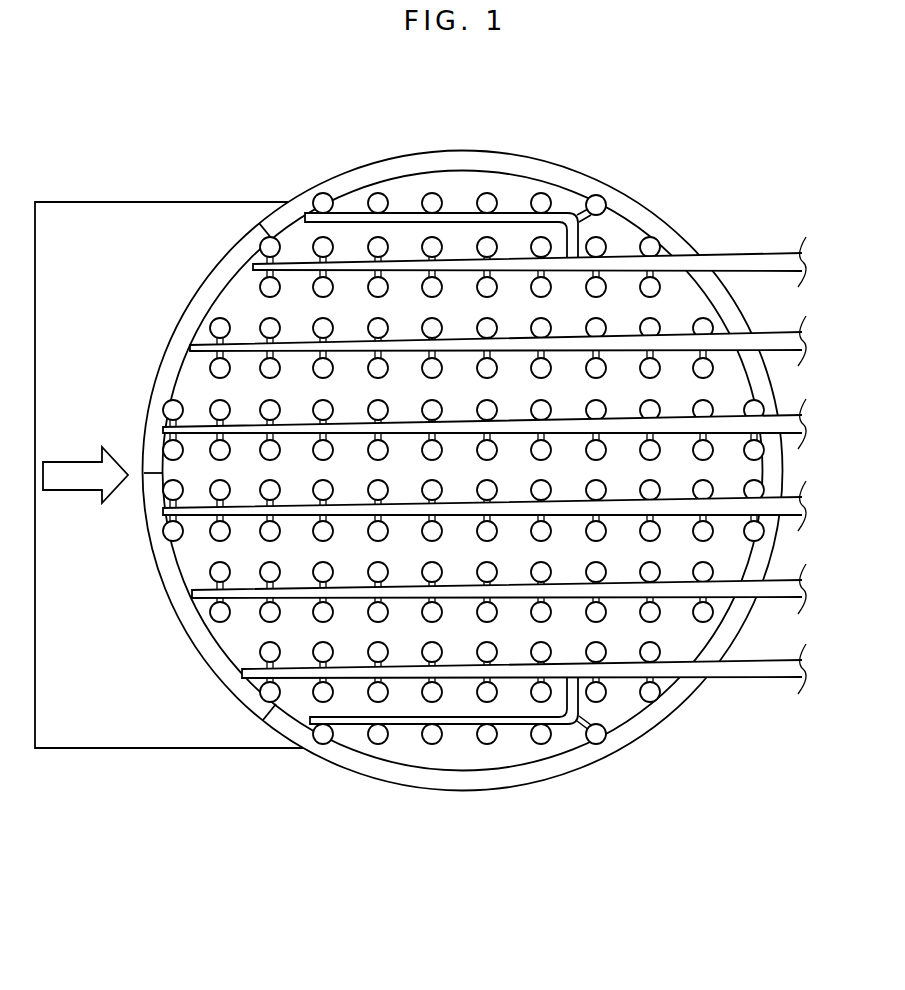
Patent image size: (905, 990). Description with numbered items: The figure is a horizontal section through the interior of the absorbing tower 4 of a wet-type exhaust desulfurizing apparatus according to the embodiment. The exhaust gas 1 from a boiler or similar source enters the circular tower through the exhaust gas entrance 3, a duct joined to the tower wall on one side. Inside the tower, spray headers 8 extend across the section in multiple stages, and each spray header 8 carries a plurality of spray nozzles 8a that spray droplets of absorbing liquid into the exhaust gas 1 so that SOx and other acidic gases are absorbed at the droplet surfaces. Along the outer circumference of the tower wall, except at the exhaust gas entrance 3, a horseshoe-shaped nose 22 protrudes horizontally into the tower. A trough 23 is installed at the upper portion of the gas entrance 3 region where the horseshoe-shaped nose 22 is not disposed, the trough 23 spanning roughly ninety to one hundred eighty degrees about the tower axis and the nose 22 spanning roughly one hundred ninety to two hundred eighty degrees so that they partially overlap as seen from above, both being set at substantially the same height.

The exhaust gas 1 is at (77, 460).
The gas entrance 3 is at (133, 738).
The absorbing tower 4 is at (409, 801).
The spray header 8 is at (756, 253).
The spray nozzle 8a is at (598, 236).
The horseshoe-shaped nose 22 is at (571, 760).
The trough 23 is at (255, 703).